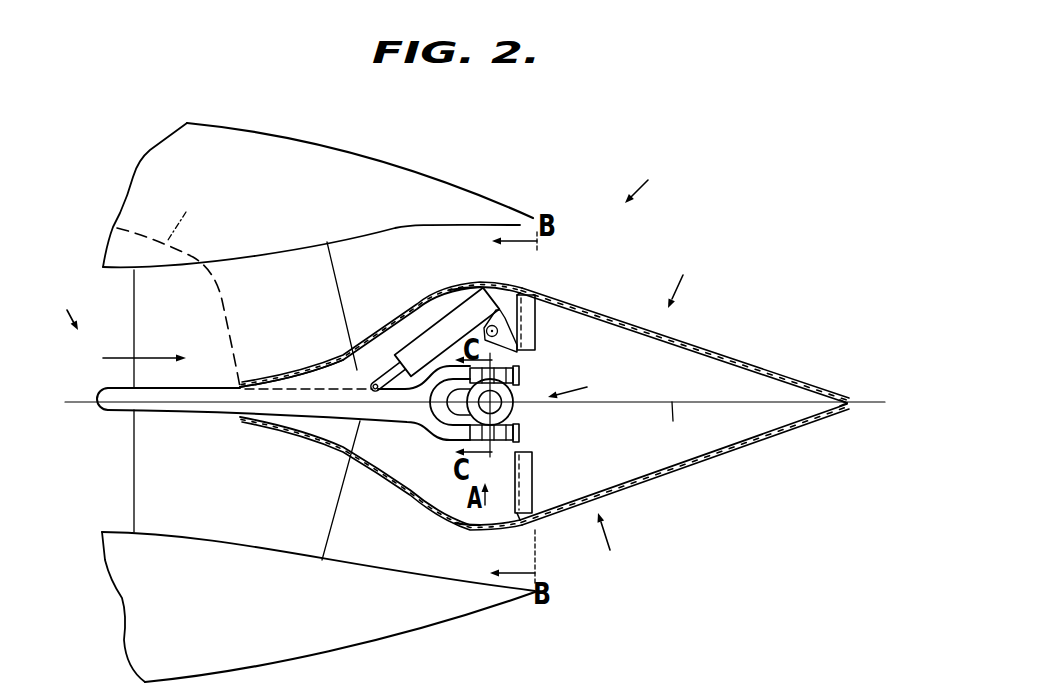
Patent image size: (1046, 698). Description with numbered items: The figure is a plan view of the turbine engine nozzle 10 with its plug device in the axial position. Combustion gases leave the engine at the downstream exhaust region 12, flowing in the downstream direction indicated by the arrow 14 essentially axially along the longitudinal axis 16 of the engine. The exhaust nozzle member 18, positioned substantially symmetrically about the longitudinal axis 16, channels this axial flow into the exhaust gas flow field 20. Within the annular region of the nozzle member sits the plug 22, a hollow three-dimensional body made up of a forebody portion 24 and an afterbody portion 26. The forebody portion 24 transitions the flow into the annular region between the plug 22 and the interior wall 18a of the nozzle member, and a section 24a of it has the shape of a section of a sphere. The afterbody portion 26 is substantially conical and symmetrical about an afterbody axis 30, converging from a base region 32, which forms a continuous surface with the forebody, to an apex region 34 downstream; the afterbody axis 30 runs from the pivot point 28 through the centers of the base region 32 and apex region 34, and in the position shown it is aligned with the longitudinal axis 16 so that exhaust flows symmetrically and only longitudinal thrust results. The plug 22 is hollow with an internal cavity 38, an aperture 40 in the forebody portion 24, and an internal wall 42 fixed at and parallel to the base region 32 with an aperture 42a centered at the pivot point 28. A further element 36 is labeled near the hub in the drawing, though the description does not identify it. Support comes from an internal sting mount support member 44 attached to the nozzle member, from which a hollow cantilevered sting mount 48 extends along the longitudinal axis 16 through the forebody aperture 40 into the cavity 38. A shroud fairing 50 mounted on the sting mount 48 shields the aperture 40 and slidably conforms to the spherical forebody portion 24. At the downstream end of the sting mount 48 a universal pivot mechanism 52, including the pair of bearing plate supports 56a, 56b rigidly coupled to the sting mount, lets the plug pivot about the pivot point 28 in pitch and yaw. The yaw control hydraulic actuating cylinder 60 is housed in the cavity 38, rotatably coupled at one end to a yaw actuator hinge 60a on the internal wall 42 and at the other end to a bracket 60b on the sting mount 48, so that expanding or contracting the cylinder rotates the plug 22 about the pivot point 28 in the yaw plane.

The turbine engine nozzle 10 is at (645, 175).
The exhaust region 12 is at (64, 303).
The arrow 14 is at (141, 357).
The longitudinal axis 16 is at (82, 405).
The exhaust nozzle member 18 is at (374, 177).
The interior wall 18a is at (432, 223).
The exhaust gas flow field 20 is at (440, 245).
The plug 22 is at (650, 415).
The forebody portion 24 is at (420, 308).
The section of forebody portion 24a is at (467, 257).
The afterbody portion 26 is at (683, 345).
The pivot point 28 is at (494, 400).
The afterbody axis 30 is at (673, 428).
The base region 32 is at (528, 287).
The apex region 34 is at (848, 401).
The yoke 36 is at (508, 410).
The internal cavity 38 is at (580, 328).
The aperture 40 is at (397, 343).
The internal wall 42 is at (533, 319).
The aperture 42a is at (545, 430).
The internal sting mount support member 44 is at (150, 295).
The sting mount 48 is at (163, 417).
The shroud fairing 50 is at (353, 353).
The universal pivot mechanism 52 is at (539, 396).
The bearing plate support 56a is at (519, 371).
The bearing plate support 56b is at (519, 441).
The yaw control hydraulic actuating cylinder 60 is at (447, 313).
The yaw actuator hinge 60a is at (509, 284).
The bracket 60b is at (347, 368).